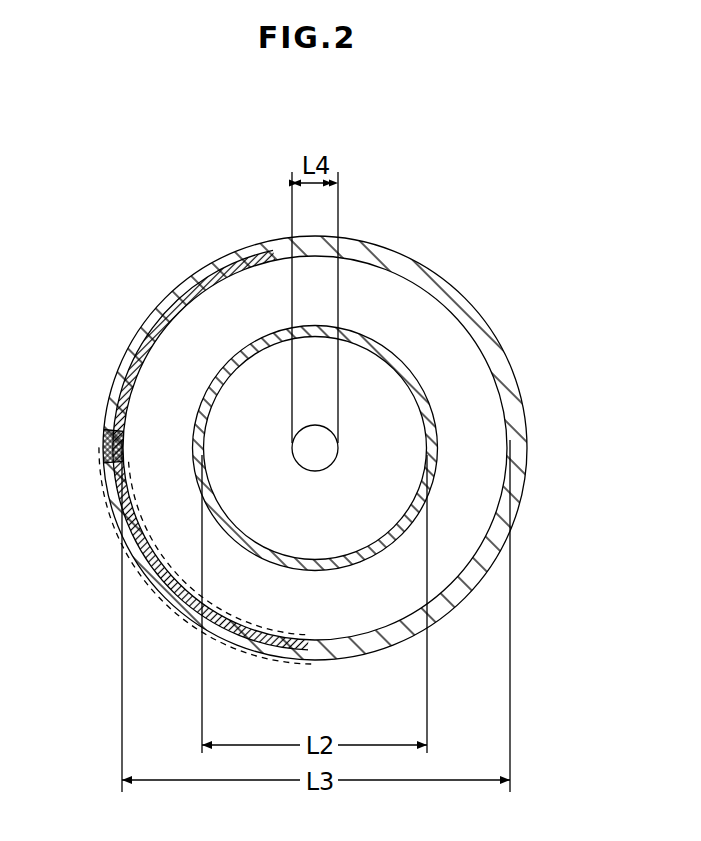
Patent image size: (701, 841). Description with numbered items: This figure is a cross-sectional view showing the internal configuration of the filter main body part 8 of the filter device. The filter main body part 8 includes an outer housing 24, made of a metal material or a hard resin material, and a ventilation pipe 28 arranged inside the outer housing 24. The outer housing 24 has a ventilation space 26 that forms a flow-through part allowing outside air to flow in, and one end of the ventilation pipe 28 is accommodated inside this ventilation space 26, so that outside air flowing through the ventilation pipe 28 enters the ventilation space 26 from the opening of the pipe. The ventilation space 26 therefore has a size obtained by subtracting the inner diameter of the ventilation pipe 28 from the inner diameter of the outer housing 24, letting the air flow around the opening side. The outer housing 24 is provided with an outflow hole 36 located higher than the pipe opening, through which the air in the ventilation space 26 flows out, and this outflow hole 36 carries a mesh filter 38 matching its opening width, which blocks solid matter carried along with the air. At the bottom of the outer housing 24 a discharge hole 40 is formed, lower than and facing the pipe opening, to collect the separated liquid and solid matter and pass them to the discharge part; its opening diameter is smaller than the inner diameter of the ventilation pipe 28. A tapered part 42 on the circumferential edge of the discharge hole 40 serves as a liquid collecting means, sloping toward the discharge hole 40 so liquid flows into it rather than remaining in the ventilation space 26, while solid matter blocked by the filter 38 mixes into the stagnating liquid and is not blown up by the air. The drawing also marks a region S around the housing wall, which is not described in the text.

The outer housing 24 is at (344, 448).
The filter main body part 8 is at (503, 347).
The ventilation space 26 is at (377, 290).
The ventilation pipe 28 is at (440, 446).
The outflow hole 36 is at (320, 657).
The filter 38 is at (114, 452).
The discharge hole 40 is at (338, 447).
The tapered part 42 is at (257, 430).
The gap S is at (108, 526).